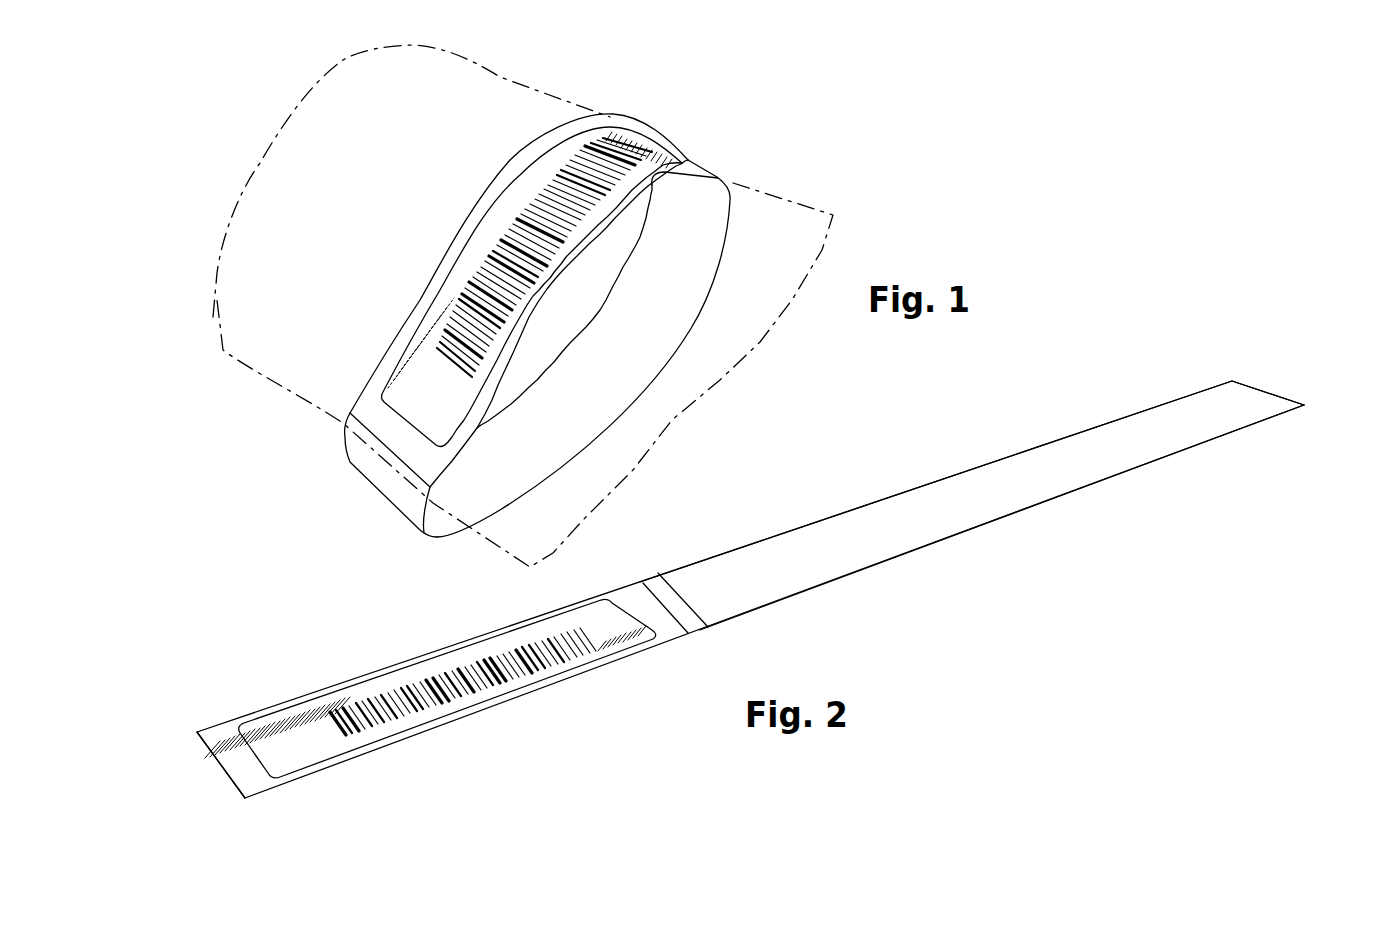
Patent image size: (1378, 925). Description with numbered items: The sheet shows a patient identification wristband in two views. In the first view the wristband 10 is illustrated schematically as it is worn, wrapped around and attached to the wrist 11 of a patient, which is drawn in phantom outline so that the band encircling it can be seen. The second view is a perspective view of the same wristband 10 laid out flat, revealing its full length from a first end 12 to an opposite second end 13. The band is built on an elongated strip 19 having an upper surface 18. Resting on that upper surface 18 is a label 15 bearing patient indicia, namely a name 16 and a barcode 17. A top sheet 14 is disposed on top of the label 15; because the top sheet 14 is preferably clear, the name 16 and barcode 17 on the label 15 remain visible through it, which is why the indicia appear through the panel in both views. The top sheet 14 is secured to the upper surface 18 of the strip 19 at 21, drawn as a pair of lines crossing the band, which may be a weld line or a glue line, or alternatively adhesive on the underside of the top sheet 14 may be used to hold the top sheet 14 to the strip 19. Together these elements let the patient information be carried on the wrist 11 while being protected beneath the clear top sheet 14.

In FIG. 1, the wristband 10 is at (668, 94).
In FIG. 2, the wristband 10 is at (746, 589).
In FIG. 1, the wrist 11 is at (497, 76).
In FIG. 2, the first end 12 is at (1263, 389).
In FIG. 2, the second end 13 is at (214, 762).
In FIG. 2, the top sheet 14 is at (254, 773).
In FIG. 2, the label 15 is at (342, 764).
In FIG. 2, the name 16 is at (447, 672).
In FIG. 2, the barcode 17 is at (501, 699).
In FIG. 2, the upper surface 18 is at (906, 536).
In FIG. 2, the strip 19 is at (945, 474).
In FIG. 2, the attachment line 21 is at (663, 603).